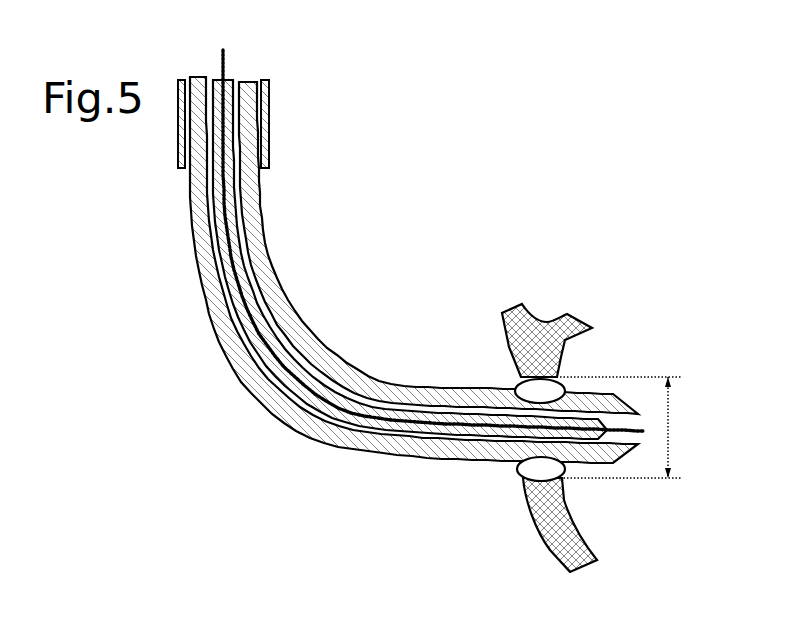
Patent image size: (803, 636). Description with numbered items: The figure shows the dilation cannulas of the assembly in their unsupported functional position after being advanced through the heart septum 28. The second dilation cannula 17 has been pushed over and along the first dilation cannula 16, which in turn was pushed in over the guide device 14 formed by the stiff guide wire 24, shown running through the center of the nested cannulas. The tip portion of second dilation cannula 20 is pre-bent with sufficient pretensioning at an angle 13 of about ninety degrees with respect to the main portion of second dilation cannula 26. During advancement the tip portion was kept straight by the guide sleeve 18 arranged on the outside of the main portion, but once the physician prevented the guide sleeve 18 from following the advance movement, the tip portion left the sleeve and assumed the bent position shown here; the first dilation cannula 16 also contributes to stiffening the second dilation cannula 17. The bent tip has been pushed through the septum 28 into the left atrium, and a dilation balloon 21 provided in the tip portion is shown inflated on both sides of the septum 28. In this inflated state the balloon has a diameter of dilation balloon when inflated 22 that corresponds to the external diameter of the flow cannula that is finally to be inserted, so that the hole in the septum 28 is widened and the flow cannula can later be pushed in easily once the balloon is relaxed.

The angle 13 is at (373, 259).
The guide device 14 is at (433, 225).
The stiff guide wire 24 is at (224, 54).
The first dilation cannula 16 is at (378, 412).
The second dilation cannula 17 is at (391, 288).
The guide sleeve 18 is at (270, 137).
The tip portion of second dilation cannula 20 is at (308, 437).
The dilation balloon 21 is at (537, 390).
The diameter of dilation balloon when inflated 22 is at (670, 417).
The main portion of second dilation cannula 26 is at (370, 288).
The septum 28 is at (542, 362).